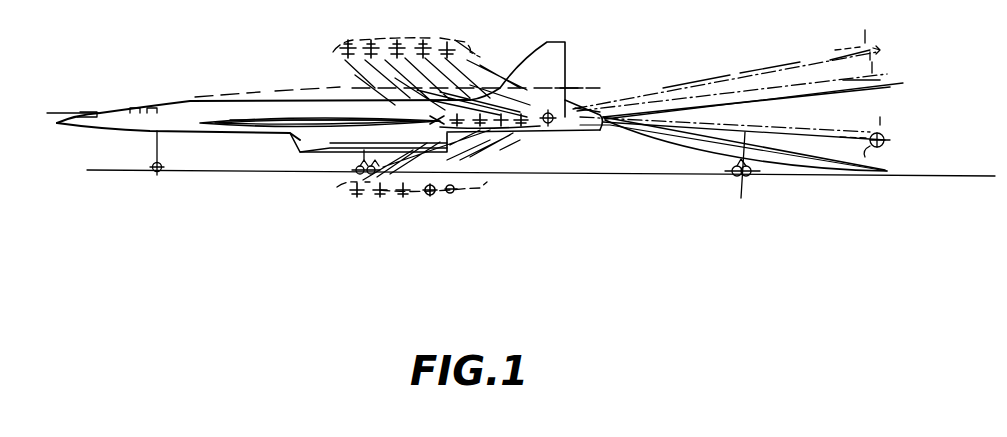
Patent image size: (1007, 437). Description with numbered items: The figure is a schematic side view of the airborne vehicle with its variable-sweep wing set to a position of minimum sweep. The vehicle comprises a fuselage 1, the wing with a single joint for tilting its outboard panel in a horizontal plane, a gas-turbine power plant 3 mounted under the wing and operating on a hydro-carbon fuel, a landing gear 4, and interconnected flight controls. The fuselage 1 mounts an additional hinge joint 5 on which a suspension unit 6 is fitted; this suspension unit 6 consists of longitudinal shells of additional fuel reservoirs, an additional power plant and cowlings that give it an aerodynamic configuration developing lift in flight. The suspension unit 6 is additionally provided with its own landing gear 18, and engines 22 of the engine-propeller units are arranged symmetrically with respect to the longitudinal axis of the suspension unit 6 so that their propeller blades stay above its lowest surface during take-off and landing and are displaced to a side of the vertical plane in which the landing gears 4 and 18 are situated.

The fuselage 1 is at (123, 123).
The gas-turbine power plant 3 is at (330, 155).
The landing gear 4 is at (360, 165).
The additional hinge joint 5 is at (548, 118).
The suspension unit 6 is at (710, 141).
The landing gear 18 is at (741, 198).
The engines 22 is at (880, 117).